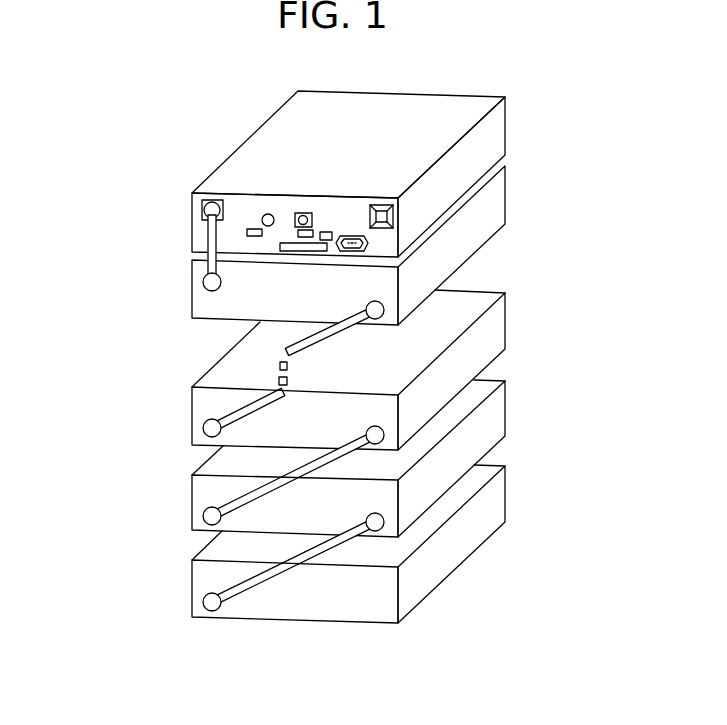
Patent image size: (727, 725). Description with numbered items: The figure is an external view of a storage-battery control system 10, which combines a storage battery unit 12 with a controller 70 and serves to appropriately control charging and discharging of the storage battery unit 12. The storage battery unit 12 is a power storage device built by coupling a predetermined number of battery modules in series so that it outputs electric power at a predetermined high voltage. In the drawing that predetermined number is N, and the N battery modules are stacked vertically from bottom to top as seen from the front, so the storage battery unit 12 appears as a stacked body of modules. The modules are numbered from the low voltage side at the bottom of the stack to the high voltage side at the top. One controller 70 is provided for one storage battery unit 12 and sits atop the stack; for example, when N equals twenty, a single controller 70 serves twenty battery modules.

The storage-battery control system 10 is at (538, 147).
The storage battery unit 12 is at (86, 283).
The controller 70 is at (240, 162).